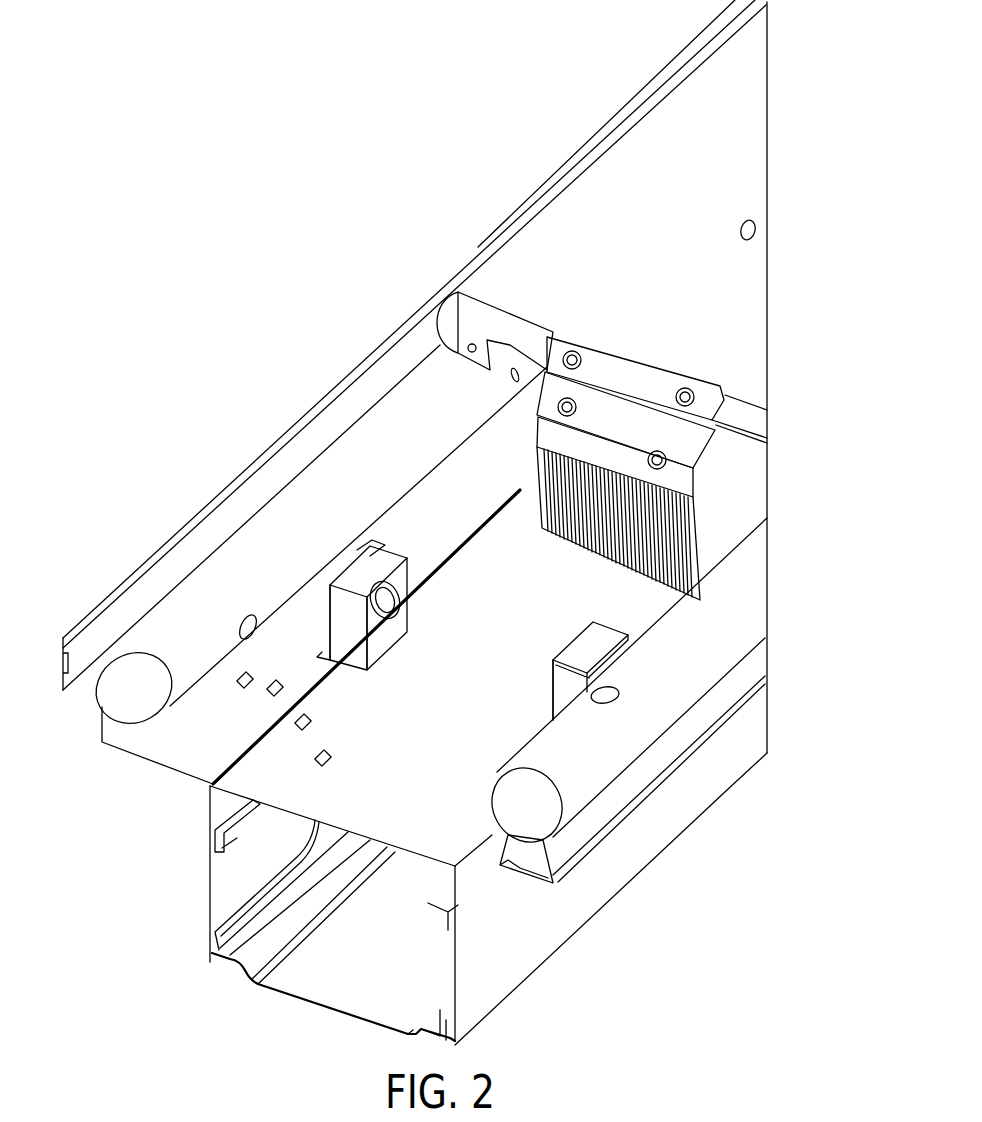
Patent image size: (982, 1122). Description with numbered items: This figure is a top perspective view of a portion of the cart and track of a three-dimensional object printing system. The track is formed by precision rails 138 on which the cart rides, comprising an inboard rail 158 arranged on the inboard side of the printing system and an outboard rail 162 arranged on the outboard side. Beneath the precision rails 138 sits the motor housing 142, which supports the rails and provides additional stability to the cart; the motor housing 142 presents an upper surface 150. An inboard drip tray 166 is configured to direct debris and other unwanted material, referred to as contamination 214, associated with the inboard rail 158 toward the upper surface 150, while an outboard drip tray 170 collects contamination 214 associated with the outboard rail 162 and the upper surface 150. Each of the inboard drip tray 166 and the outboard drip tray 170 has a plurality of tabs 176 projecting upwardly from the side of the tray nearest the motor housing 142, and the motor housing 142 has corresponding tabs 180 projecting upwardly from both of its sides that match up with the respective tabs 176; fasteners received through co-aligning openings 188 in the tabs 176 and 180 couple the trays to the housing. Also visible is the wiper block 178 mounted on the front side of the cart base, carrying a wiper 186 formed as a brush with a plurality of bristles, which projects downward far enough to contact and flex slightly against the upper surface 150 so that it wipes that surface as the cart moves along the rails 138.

The precision rails 138 is at (213, 583).
The motor housing 142 is at (468, 946).
The upper surface 150 is at (250, 783).
The inboard rail 158 is at (597, 760).
The outboard rail 162 is at (172, 622).
The inboard drip tray 166 is at (495, 812).
The outboard drip tray 170 is at (135, 745).
The tabs 176 is at (382, 558).
The wiper block 178 is at (643, 378).
The tabs 180 is at (347, 657).
The wiper 186 is at (690, 518).
The co-aligning openings 188 is at (390, 600).
The contamination 214 is at (318, 757).